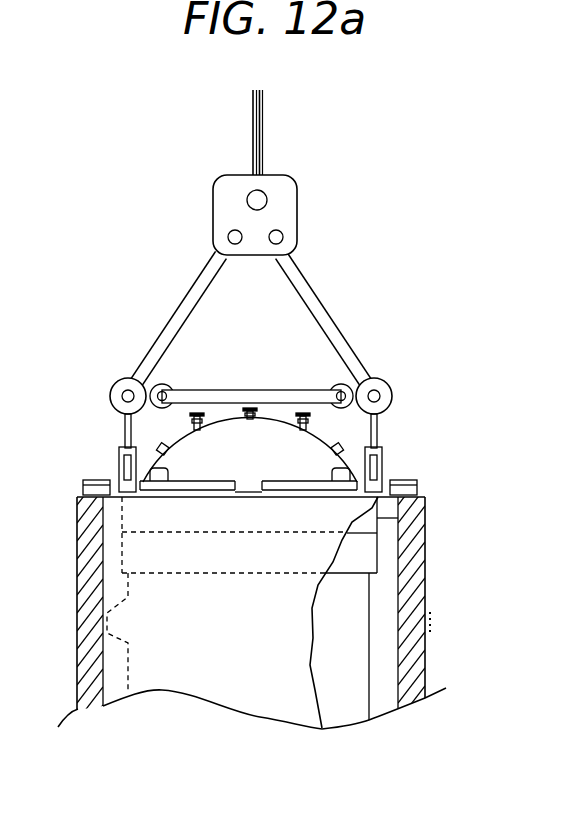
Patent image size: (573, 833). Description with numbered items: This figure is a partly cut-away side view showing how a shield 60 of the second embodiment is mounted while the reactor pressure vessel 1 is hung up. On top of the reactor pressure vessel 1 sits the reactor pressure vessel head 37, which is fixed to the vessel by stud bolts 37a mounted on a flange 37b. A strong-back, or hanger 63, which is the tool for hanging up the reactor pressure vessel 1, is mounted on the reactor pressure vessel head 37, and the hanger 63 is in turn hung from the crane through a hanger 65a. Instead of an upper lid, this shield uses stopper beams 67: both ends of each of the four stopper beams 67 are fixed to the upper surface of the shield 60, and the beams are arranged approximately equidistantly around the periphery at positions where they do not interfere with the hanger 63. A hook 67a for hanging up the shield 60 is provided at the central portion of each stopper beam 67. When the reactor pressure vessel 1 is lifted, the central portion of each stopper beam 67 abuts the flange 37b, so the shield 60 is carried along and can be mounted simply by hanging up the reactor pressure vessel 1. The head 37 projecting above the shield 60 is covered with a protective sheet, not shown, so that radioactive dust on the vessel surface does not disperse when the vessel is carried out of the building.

The hanger 65a is at (263, 131).
The strong-back (hanger) 63 is at (362, 355).
The reactor pressure vessel head 37 is at (320, 443).
The stud bolts 37a is at (385, 482).
The stopper beams 67 is at (420, 487).
The flange 37b is at (380, 518).
The shield 60 is at (425, 590).
The reactor pressure vessel 1 is at (369, 645).
The hook 67a is at (338, 455).